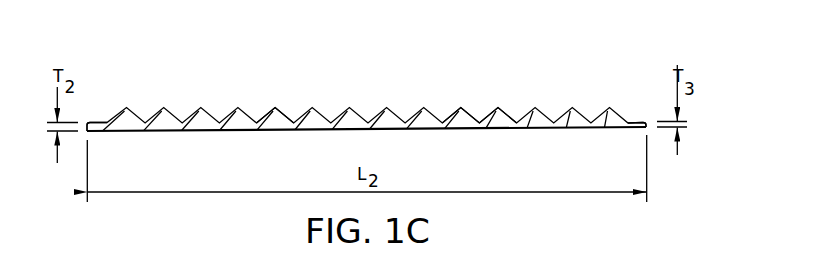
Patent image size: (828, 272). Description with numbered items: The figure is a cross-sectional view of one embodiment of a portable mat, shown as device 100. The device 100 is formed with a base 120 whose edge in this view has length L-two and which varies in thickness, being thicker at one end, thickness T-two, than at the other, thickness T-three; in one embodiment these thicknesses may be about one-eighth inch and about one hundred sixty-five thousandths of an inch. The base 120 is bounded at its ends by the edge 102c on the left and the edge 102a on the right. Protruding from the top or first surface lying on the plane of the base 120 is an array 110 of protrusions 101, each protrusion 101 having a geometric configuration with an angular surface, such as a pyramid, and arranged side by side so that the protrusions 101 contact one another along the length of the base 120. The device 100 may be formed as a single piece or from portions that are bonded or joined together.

The device 100 is at (350, 78).
The protrusion 101 is at (286, 113).
The array of protrusions 110 is at (477, 97).
The edge 102c is at (102, 98).
The edge 102a is at (632, 100).
The base 120 is at (558, 128).